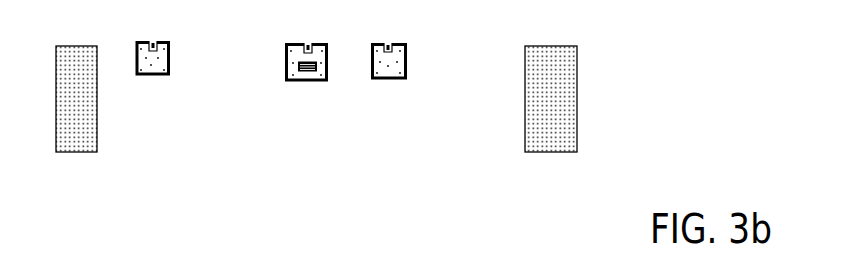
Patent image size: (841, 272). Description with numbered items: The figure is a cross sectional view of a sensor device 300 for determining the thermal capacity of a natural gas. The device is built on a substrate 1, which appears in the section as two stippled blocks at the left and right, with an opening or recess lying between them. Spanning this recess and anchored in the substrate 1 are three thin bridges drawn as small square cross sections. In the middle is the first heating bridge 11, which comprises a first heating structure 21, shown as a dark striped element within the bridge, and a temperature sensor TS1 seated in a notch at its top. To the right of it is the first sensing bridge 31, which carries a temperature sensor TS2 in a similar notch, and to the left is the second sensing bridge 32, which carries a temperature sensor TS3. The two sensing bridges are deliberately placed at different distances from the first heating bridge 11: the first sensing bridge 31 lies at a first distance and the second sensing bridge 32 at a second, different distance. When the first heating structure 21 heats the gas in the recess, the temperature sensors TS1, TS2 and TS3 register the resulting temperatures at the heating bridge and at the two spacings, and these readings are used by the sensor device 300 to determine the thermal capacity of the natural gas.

The substrate 1 is at (65, 89).
The temperature sensor TS1 is at (308, 43).
The temperature sensor TS2 is at (392, 43).
The temperature sensor TS3 is at (153, 42).
The first heating bridge 11 is at (287, 49).
The first heating structure 21 is at (298, 67).
The first sensing bridge 31 is at (407, 72).
The second sensing bridge 32 is at (170, 68).
The sensor device 300 is at (754, 160).